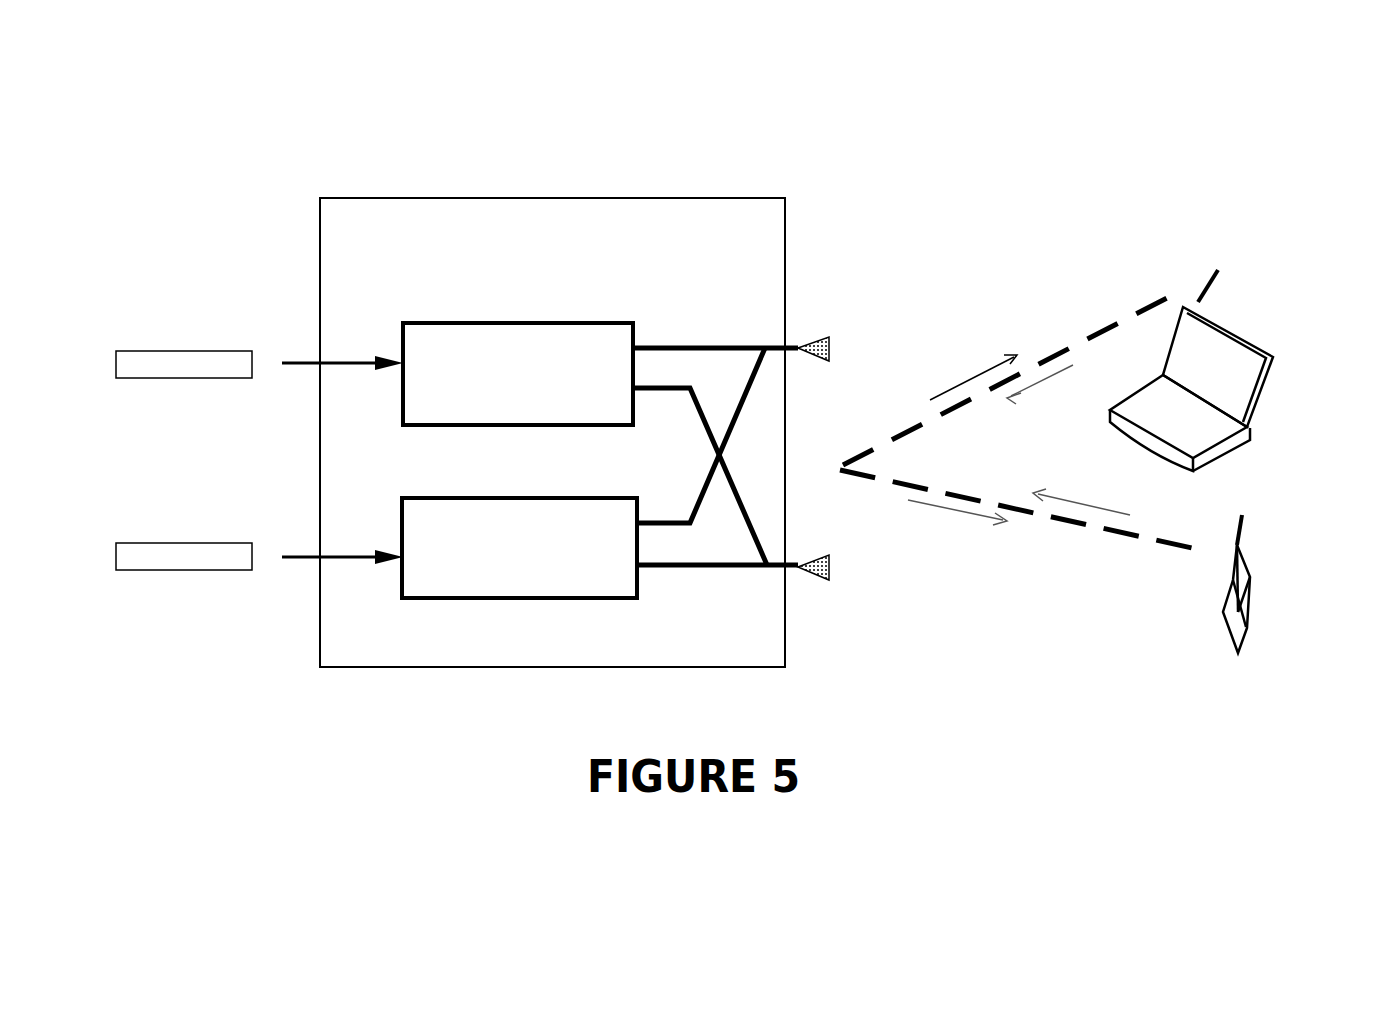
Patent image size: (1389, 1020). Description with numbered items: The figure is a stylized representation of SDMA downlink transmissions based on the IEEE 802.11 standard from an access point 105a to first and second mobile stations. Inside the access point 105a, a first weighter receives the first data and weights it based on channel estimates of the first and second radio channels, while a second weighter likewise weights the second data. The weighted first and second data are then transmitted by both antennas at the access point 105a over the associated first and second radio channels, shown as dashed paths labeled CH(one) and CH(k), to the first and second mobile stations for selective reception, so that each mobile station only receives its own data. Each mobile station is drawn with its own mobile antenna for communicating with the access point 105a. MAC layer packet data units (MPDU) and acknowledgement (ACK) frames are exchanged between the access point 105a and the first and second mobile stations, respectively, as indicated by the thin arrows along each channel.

The access point 105a is at (560, 198).